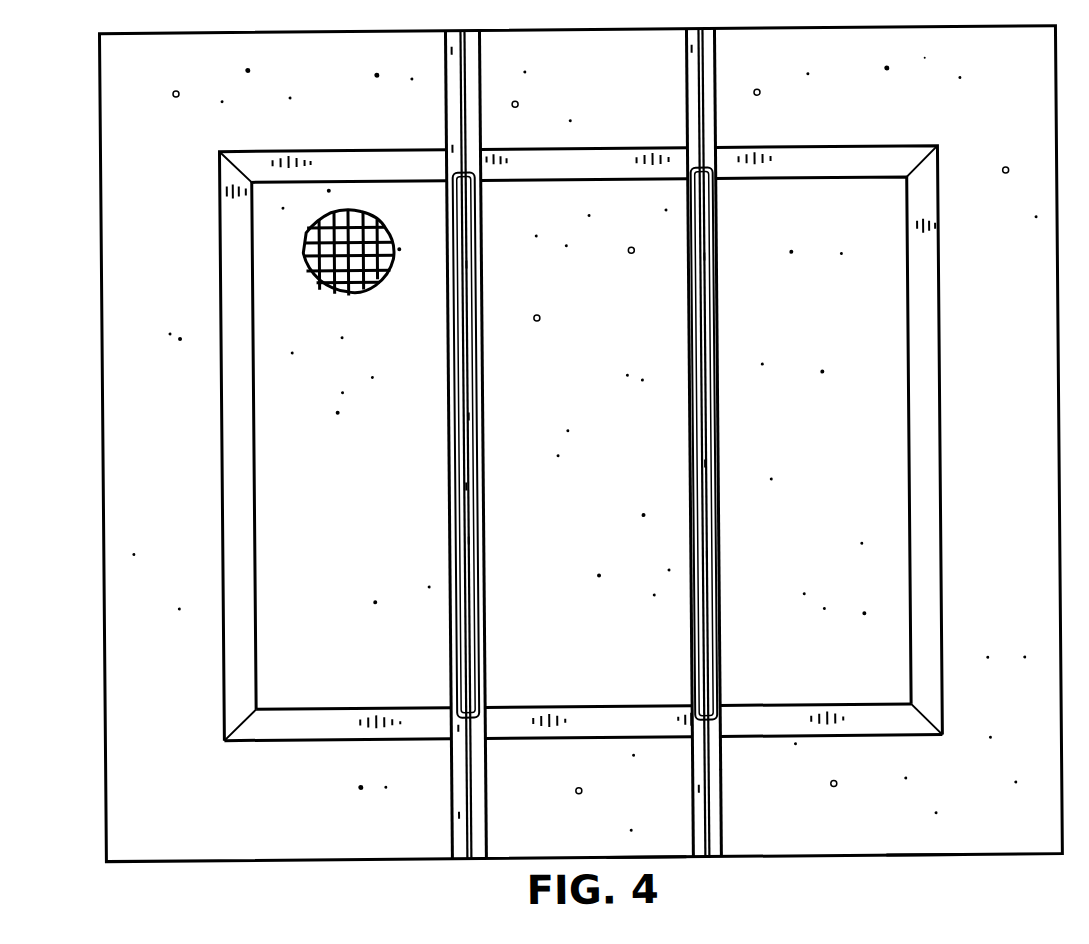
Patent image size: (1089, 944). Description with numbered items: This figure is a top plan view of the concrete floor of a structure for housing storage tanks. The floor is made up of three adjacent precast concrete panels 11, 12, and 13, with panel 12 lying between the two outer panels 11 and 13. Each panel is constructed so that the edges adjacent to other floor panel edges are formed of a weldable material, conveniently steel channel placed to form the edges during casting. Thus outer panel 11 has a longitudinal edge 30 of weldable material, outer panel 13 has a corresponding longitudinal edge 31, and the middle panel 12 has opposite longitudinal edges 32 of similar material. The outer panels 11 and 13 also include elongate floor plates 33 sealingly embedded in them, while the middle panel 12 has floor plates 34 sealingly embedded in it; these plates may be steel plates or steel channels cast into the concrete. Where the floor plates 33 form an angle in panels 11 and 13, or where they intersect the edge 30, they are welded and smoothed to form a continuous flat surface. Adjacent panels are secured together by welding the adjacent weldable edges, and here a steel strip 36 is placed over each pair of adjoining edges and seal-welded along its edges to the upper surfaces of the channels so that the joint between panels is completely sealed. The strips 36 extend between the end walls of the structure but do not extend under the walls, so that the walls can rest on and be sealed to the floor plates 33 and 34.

The precast concrete floor panel 11 is at (118, 828).
The precast concrete floor panel 12 is at (667, 849).
The precast concrete floor panel 13 is at (923, 854).
The longitudinal edge 30 is at (451, 853).
The longitudinal edge 31 is at (713, 849).
The longitudinal edges 32 is at (468, 831).
The floor plates 33 is at (242, 472).
The floor plates 34 is at (620, 726).
The steel strip 36 is at (460, 470).